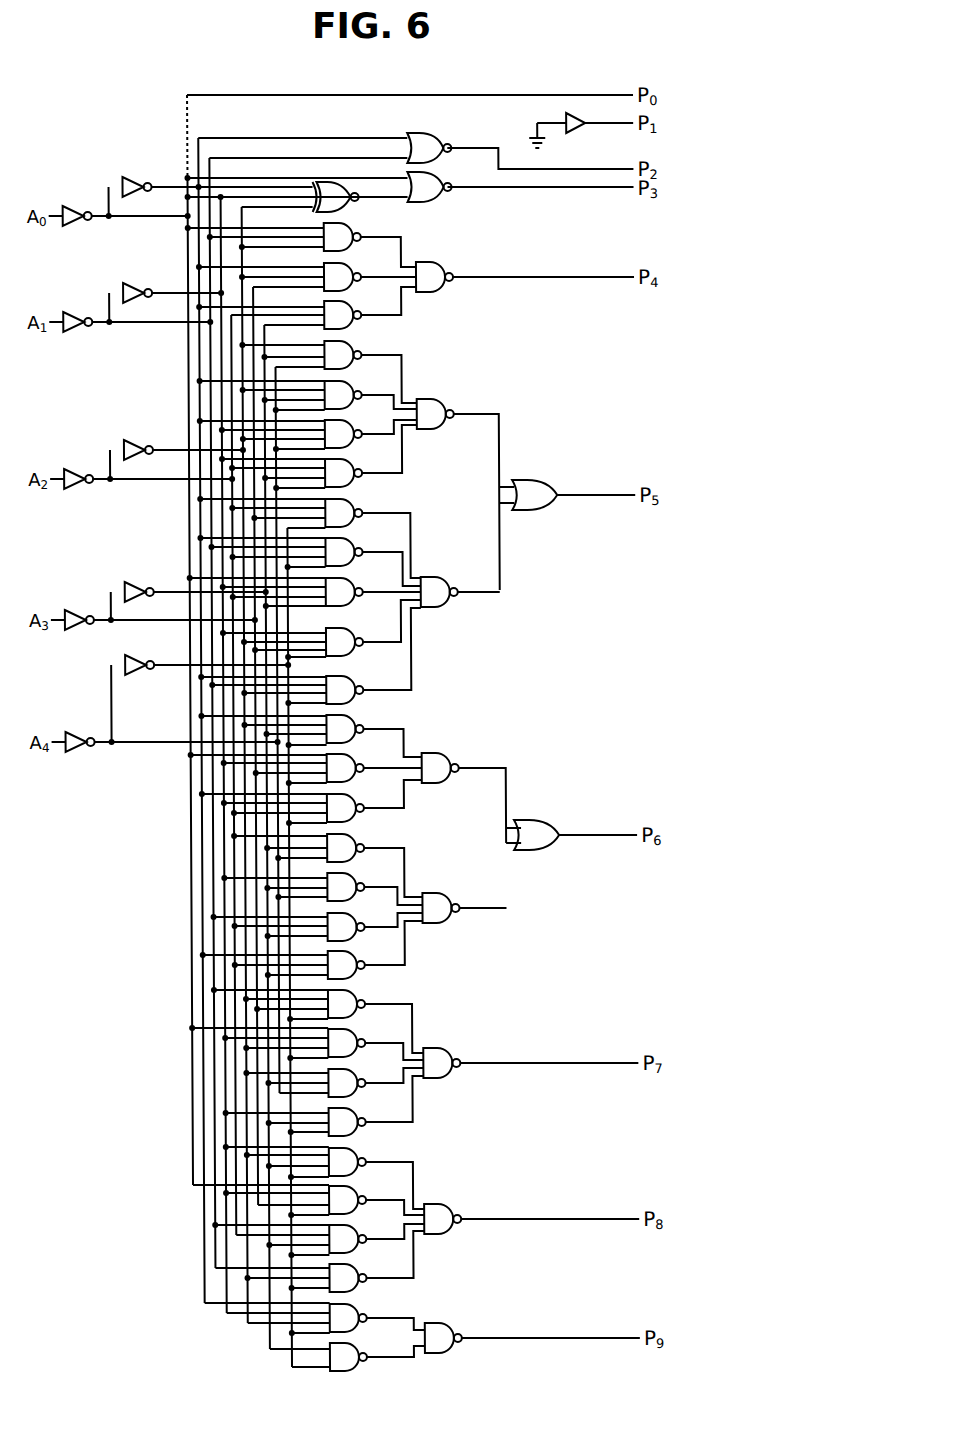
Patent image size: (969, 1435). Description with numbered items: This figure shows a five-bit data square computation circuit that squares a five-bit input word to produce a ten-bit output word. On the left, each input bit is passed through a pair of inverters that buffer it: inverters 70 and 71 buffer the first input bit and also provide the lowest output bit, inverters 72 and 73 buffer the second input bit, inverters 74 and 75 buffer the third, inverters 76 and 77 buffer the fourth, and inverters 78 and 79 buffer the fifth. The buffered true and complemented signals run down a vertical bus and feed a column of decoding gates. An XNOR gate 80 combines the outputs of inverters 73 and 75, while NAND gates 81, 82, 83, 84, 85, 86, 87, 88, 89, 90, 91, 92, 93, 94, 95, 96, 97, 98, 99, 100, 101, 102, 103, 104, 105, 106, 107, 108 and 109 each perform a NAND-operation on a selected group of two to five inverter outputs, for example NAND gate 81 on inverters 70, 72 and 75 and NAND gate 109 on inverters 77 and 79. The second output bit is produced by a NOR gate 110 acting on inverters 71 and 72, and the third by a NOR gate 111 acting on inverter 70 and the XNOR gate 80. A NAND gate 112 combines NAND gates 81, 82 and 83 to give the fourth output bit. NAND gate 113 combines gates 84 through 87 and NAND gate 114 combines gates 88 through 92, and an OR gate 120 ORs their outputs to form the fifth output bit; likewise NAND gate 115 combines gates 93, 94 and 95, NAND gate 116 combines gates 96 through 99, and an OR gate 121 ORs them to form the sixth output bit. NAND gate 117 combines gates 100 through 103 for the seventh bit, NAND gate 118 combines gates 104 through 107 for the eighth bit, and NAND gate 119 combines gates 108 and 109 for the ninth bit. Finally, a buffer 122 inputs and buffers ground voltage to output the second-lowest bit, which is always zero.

The inverter 70 is at (76, 210).
The inverter 71 is at (135, 184).
The inverter 72 is at (76, 318).
The inverter 73 is at (136, 288).
The inverter 74 is at (73, 472).
The inverter 75 is at (135, 443).
The inverter 76 is at (72, 612).
The inverter 77 is at (136, 582).
The inverter 78 is at (76, 729).
The inverter 79 is at (135, 670).
The XNOR gate 80 is at (352, 203).
The NAND gate 81 is at (352, 243).
The NAND gate 82 is at (352, 283).
The NAND gate 83 is at (352, 321).
The NAND gate 84 is at (352, 361).
The NAND gate 85 is at (352, 401).
The NAND gate 86 is at (352, 440).
The NAND gate 87 is at (352, 479).
The NAND gate 88 is at (352, 519).
The NAND gate 89 is at (352, 558).
The NAND gate 90 is at (352, 598).
The NAND gate 91 is at (352, 648).
The NAND gate 92 is at (352, 696).
The NAND gate 93 is at (352, 735).
The NAND gate 94 is at (352, 774).
The NAND gate 95 is at (352, 814).
The NAND gate 96 is at (352, 854).
The NAND gate 97 is at (352, 893).
The NAND gate 98 is at (352, 933).
The NAND gate 99 is at (352, 971).
The NAND gate 100 is at (352, 1010).
The NAND gate 101 is at (352, 1049).
The NAND gate 102 is at (352, 1089).
The NAND gate 103 is at (352, 1128).
The NAND gate 104 is at (352, 1168).
The NAND gate 105 is at (352, 1206).
The NAND gate 106 is at (352, 1245).
The NAND gate 107 is at (352, 1284).
The NAND gate 108 is at (352, 1324).
The NAND gate 109 is at (352, 1363).
The NOR gate 110 is at (445, 155).
The NOR gate 111 is at (445, 194).
The NAND gate 112 is at (445, 284).
The NAND gate 113 is at (445, 421).
The NAND gate 114 is at (448, 599).
The NAND gate 115 is at (448, 775).
The NAND gate 116 is at (448, 915).
The NAND gate 117 is at (448, 1070).
The NAND gate 118 is at (448, 1226).
The NAND gate 119 is at (448, 1345).
The OR gate 120 is at (530, 511).
The OR gate 121 is at (530, 851).
The buffer 122 is at (578, 128).